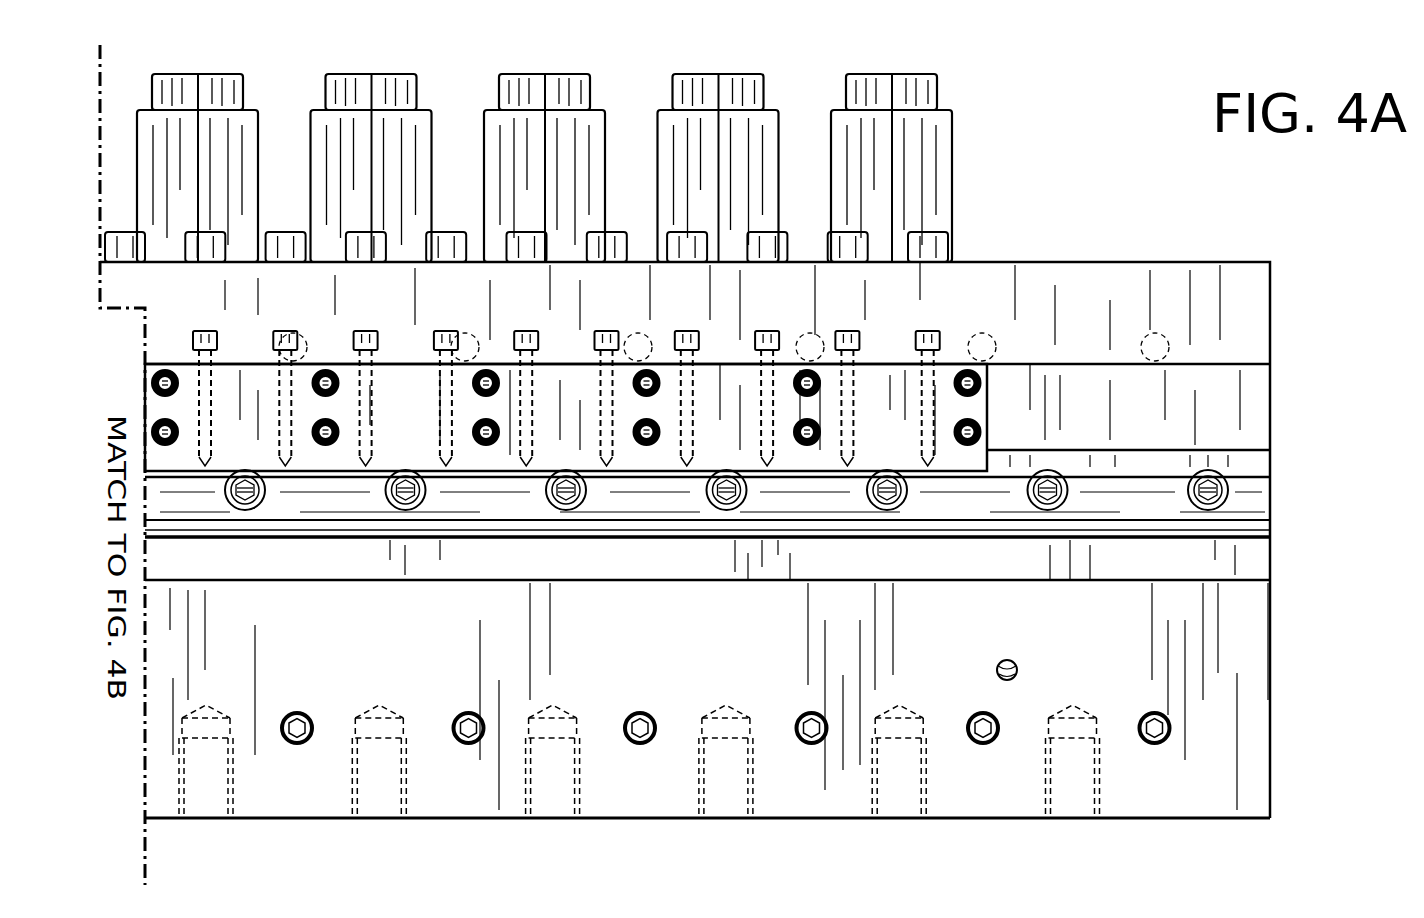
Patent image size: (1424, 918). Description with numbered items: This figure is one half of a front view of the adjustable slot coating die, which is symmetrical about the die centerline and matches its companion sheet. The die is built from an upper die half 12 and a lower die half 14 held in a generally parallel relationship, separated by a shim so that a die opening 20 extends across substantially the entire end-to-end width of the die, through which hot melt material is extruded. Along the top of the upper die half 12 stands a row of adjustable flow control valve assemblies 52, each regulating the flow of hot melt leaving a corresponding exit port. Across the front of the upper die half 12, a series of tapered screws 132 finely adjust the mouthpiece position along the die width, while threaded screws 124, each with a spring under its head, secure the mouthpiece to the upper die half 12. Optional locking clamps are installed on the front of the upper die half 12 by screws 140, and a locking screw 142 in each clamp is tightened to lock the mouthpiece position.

The upper die half 12 is at (1200, 285).
The lower die half 14 is at (1243, 717).
The die opening 20 is at (1278, 532).
The flow control valve assembly 52 is at (394, 75).
The threaded screw 124 is at (1225, 486).
The tapered screw 132 is at (930, 244).
The clamp screw 140 is at (985, 384).
The locking screw 142 is at (928, 330).